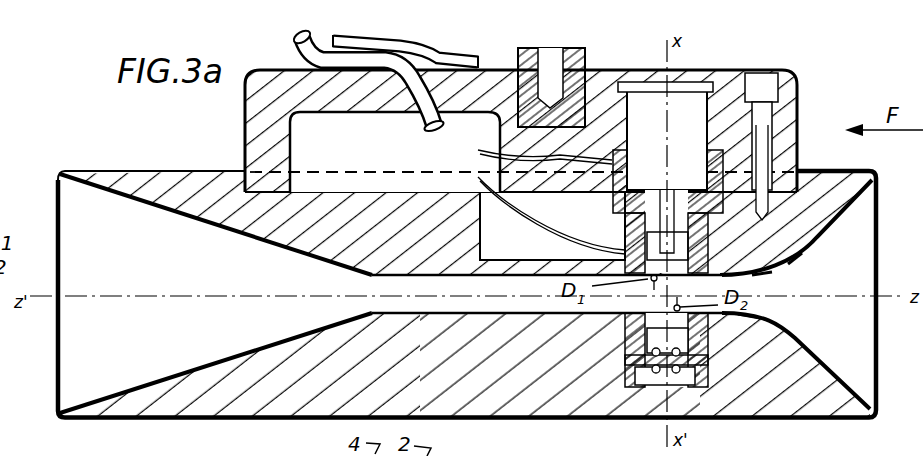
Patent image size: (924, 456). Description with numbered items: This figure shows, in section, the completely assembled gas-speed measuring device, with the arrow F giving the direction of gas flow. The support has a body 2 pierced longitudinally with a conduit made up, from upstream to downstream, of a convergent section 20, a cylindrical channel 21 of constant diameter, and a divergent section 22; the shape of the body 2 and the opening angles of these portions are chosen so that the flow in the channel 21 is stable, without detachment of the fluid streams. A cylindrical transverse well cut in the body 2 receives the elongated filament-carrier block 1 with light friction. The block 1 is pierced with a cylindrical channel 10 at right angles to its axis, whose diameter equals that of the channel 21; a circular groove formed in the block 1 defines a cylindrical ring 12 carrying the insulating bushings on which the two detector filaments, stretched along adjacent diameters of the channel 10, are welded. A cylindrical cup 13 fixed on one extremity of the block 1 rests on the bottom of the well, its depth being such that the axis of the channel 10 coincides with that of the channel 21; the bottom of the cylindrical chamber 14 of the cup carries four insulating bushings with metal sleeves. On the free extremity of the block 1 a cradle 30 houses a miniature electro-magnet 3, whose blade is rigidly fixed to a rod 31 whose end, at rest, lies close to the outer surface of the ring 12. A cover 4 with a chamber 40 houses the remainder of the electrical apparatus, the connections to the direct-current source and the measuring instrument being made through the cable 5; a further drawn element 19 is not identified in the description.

The block 1 is at (812, 243).
The body 2 is at (321, 418).
The electro-magnet 3 is at (693, 137).
The cover 4 is at (250, 113).
The cable 5 is at (296, 53).
The cylindrical channel 10 is at (744, 318).
The cylindrical ring 12 is at (768, 273).
The cylindrical cup 13 is at (710, 375).
The cylindrical chamber 14 is at (663, 384).
The connecting wires 19 is at (612, 250).
The convergent section 20 is at (848, 338).
The cylindrical channel 21 is at (372, 306).
The divergent section 22 is at (82, 335).
The cradle 30 is at (610, 205).
The rod 31 is at (794, 263).
The chamber 40 is at (302, 150).